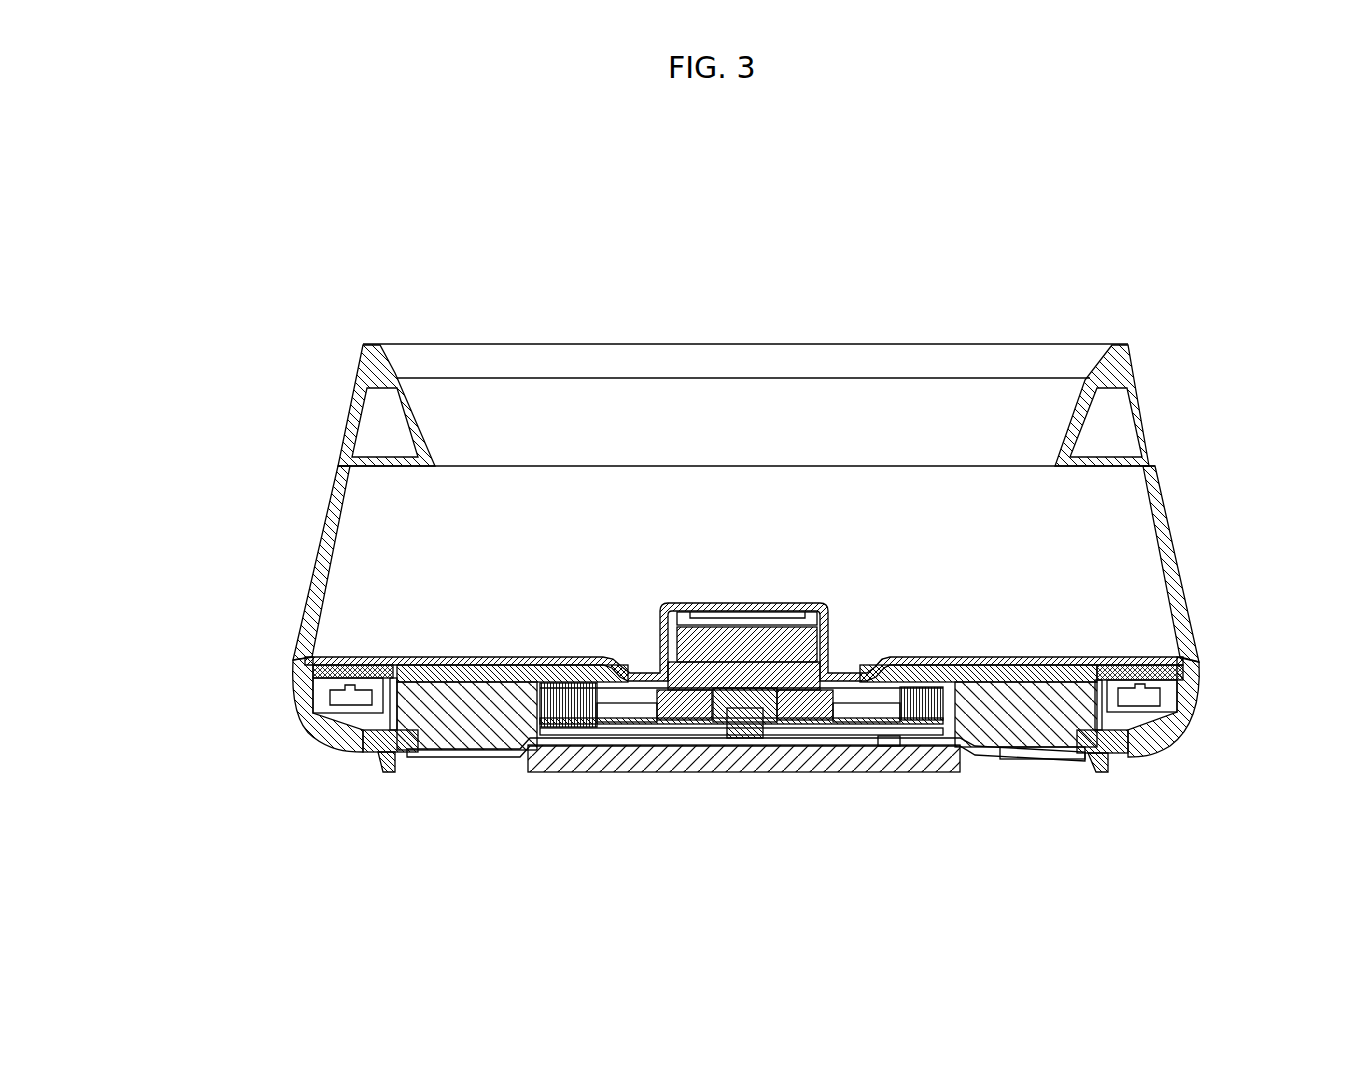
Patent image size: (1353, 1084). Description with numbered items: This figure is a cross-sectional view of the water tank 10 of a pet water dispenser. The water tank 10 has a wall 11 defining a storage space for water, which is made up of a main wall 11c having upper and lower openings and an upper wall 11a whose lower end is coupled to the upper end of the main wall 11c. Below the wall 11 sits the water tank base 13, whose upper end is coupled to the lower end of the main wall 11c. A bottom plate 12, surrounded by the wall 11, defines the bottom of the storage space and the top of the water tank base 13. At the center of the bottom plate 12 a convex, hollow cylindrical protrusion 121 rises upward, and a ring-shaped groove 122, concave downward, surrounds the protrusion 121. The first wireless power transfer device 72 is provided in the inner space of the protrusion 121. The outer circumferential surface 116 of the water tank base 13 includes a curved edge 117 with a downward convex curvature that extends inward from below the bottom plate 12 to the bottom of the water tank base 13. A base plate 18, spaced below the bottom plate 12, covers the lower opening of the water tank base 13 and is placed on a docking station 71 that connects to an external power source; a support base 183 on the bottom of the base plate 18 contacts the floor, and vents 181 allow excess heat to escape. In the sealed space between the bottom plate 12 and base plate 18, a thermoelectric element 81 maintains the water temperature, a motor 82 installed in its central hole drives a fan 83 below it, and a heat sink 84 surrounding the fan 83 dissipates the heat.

The water tank 10 is at (486, 142).
The wall 11 is at (150, 396).
The upper wall 11a is at (318, 412).
The main wall 11c is at (315, 493).
The bottom plate 12 is at (1133, 657).
The protrusion 121 is at (723, 603).
The ring-shaped groove 122 is at (890, 740).
The water tank base 13 is at (270, 684).
The outer circumferential surface 116 is at (390, 751).
The curved edge 117 is at (315, 727).
The base plate 18 is at (943, 747).
The vents 181 is at (1053, 760).
The support base 183 is at (1118, 760).
The docking station 71 is at (815, 760).
The first wireless power transfer device 72 is at (745, 613).
The thermoelectric element 81 is at (472, 688).
The motor 82 is at (690, 745).
The fan 83 is at (647, 762).
The heat sink 84 is at (513, 750).